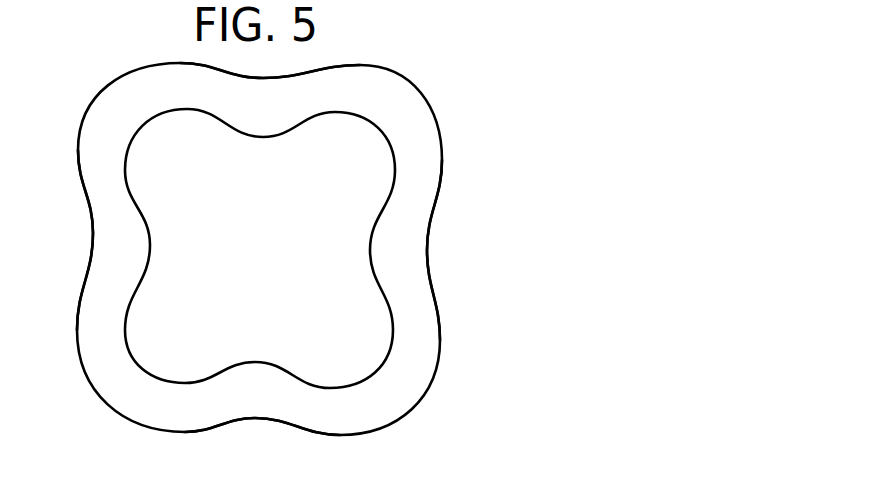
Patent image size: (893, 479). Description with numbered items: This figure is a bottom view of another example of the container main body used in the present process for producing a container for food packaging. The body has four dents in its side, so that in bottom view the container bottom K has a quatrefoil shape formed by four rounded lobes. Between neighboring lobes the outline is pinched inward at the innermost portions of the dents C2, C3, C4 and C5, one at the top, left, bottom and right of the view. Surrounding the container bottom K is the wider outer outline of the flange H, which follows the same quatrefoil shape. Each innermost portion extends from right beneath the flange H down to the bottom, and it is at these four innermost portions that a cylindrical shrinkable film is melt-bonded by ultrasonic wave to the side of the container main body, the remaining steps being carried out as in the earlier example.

The flange H is at (398, 400).
The container bottom K is at (358, 319).
The innermost portion of dent C2 is at (265, 135).
The innermost portion of dent C3 is at (148, 245).
The innermost portion of dent C4 is at (257, 362).
The innermost portion of dent C5 is at (370, 252).